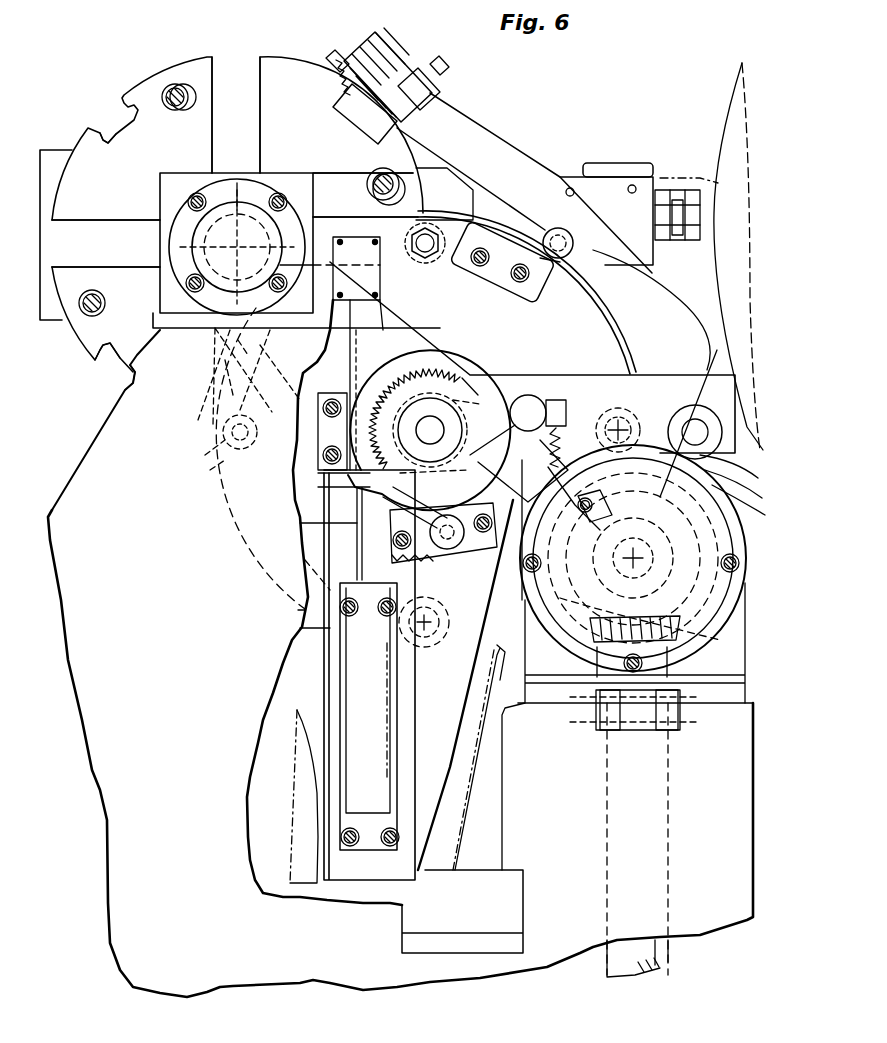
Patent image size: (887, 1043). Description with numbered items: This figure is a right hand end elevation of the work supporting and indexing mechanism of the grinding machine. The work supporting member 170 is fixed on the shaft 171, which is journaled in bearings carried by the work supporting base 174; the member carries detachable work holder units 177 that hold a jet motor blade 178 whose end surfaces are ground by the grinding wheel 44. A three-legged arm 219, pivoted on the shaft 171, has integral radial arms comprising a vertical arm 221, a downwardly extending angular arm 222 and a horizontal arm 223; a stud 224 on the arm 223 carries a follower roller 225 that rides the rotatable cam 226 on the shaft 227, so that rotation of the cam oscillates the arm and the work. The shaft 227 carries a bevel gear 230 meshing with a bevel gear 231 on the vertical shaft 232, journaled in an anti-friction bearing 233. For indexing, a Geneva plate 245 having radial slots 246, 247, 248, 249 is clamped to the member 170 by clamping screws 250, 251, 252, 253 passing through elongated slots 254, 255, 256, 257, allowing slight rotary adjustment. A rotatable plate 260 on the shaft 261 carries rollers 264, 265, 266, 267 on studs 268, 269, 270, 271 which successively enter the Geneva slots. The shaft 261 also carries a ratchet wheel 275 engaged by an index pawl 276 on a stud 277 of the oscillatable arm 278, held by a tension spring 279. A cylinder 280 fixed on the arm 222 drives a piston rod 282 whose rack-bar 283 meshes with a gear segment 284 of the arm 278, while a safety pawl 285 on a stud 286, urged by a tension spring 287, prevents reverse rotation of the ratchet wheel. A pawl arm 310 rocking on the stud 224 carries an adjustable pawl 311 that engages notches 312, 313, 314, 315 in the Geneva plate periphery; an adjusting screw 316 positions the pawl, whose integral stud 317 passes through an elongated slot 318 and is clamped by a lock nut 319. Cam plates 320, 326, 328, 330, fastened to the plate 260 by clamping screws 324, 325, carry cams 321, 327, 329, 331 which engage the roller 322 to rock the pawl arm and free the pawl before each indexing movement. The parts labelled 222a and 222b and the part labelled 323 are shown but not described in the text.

The grinding wheel 44 is at (720, 111).
The work supporting member 170 is at (60, 143).
The shaft 171 is at (237, 178).
The work supporting base 174 is at (105, 435).
The work holder unit 177 is at (623, 157).
The jet motor blade 178 is at (705, 233).
The 3-legged arm 219 is at (560, 360).
The vertical extending arm 221 is at (400, 328).
The downwardly extending angularly arranged arm 222 is at (372, 880).
The bracket blade 222a is at (303, 887).
The bracket foot 222b is at (460, 870).
The horizontally extending arm 223 is at (758, 478).
The stud 224 is at (733, 424).
The follower roller 225 is at (758, 501).
The rotatable cam 226 is at (746, 540).
The rotatable shaft 227 is at (748, 570).
The bevel gear 230 is at (750, 605).
The bevel gear 231 is at (746, 648).
The vertical rotatable shaft 232 is at (740, 758).
The anti-friction bearing 233 is at (752, 703).
The Geneva plate 245 is at (132, 78).
The radially extending slot 246 is at (218, 60).
The radially extending slot 247 is at (103, 222).
The radially extending slot 248 is at (225, 432).
The radially extending slot 249 is at (340, 220).
The clamping screw 250 is at (175, 85).
The clamping screw 251 is at (85, 315).
The clamping screw 252 is at (318, 460).
The clamping screw 253 is at (368, 176).
The elongated slot 254 is at (190, 85).
The elongated slot 255 is at (95, 325).
The elongated slot 256 is at (239, 447).
The elongated slot 257 is at (383, 172).
The rotatable plate 260 is at (608, 290).
The rotatable shaft 261 is at (432, 432).
The roller 264 is at (206, 475).
The roller 265 is at (440, 215).
The roller 266 is at (600, 412).
The roller 267 is at (460, 670).
The stud 268 is at (200, 455).
The stud 269 is at (435, 262).
The stud 270 is at (620, 415).
The stud 271 is at (430, 637).
The ratchet wheel 275 is at (470, 378).
The index pawl 276 is at (468, 447).
The stud 277 is at (549, 381).
The oscillatable arm 278 is at (510, 395).
The tension spring 279 is at (552, 437).
The cylinder 280 is at (350, 680).
The piston rod 282 is at (300, 523).
The rack-bar 283 is at (414, 412).
The gear segment 284 is at (405, 476).
The safety pawl 285 is at (380, 498).
The stud 286 is at (461, 553).
The tension spring 287 is at (443, 548).
The pawl arm 310 is at (510, 165).
The adjustable pawl 311 is at (340, 78).
The notch 312 is at (345, 108).
The notch 313 is at (122, 104).
The notch 314 is at (130, 365).
The notch 315 is at (368, 385).
The adjusting screw 316 is at (338, 50).
The integral stud 317 is at (425, 62).
The elongated slot 318 is at (398, 42).
The lock nut 319 is at (445, 85).
The cam plate 320 is at (505, 285).
The cam 321 is at (540, 235).
The roller 322 is at (570, 212).
The pivot 323 is at (566, 245).
The clamping screw 324 is at (485, 243).
The clamping screw 325 is at (517, 262).
The cam plate 326 is at (612, 512).
The cam 327 is at (633, 558).
The cam plate 328 is at (300, 628).
The cam 329 is at (298, 610).
The cam plate 330 is at (228, 358).
The cam 331 is at (235, 338).